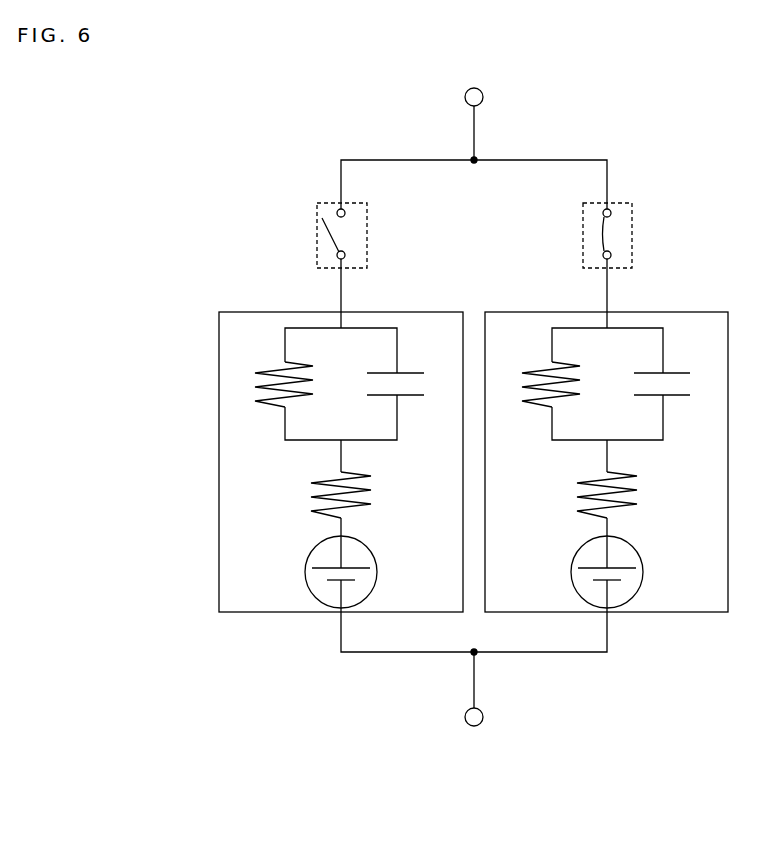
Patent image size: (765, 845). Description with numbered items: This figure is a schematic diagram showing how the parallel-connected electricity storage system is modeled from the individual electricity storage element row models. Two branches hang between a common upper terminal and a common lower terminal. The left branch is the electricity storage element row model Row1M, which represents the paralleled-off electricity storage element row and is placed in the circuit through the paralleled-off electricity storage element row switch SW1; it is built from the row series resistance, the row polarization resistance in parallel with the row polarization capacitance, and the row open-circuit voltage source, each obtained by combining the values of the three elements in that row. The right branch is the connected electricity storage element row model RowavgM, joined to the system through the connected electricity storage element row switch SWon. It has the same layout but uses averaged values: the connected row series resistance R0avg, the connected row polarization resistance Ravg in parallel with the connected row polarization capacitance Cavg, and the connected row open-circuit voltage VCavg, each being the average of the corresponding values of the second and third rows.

The paralleled-off electricity storage element row switch SW1 is at (316, 243).
The connected electricity storage element row switch SWon is at (582, 243).
The electricity storage element row model Row1M is at (219, 310).
The connected electricity storage element row model RowavgM is at (486, 310).
The connected electricity storage element row polarization resistance Ravg is at (524, 378).
The connected electricity storage element row polarization capacitance Cavg is at (694, 357).
The connected electricity storage element row series resistance R0avg is at (578, 489).
The connected electricity storage element row open-circuit voltage VCavg is at (634, 540).